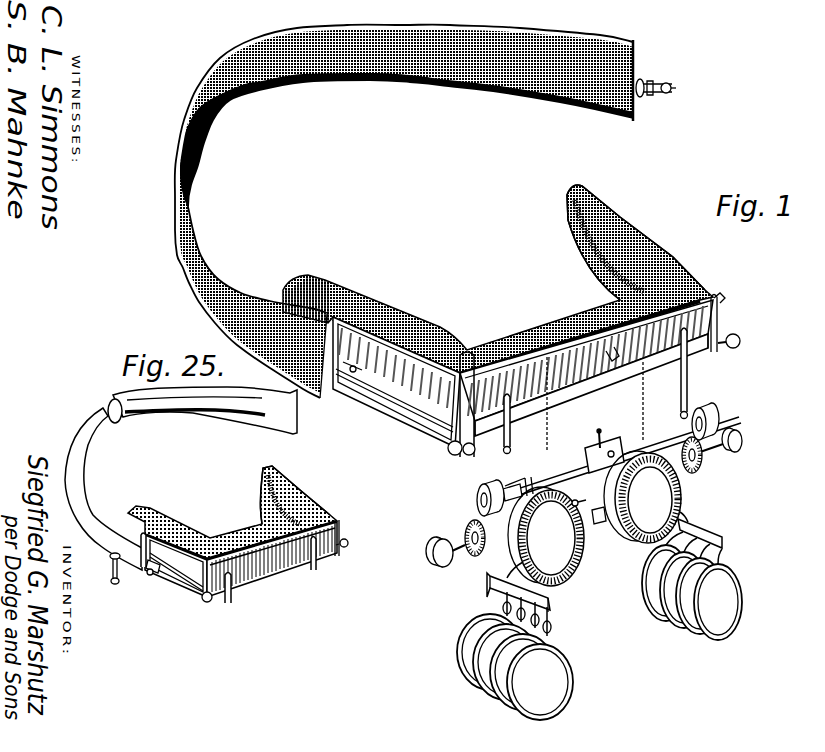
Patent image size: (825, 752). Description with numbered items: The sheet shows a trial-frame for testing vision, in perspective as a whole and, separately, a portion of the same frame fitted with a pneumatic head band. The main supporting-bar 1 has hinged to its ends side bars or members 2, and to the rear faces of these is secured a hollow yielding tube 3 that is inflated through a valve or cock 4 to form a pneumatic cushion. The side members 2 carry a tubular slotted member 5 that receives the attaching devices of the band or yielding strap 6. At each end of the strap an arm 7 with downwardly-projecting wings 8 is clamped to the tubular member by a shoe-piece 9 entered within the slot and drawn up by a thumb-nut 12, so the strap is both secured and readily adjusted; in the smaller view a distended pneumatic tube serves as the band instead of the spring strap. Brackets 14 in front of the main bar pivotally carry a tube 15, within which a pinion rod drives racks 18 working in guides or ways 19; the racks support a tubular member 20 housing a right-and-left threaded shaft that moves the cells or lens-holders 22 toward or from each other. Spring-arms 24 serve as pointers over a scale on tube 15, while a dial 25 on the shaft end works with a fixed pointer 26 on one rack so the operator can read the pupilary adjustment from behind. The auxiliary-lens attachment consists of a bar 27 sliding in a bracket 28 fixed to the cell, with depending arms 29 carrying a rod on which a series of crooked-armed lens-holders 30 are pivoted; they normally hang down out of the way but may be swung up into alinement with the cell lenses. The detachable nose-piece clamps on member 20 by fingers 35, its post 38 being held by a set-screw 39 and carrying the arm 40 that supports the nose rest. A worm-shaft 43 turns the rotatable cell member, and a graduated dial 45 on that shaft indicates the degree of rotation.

In FIG. 1, the main supporting-bar 1 is at (722, 308).
In FIG. 25, the main supporting-bar 1 is at (340, 534).
In FIG. 1, the side bars or members 2 is at (680, 268).
In FIG. 25, the side bars or members 2 is at (312, 502).
In FIG. 1, the hollow yielding body or tube 3 is at (580, 265).
In FIG. 25, the hollow yielding body or tube 3 is at (268, 503).
In FIG. 1, the valve or cock 4 is at (612, 358).
In FIG. 25, the valve or cock 4 is at (297, 566).
In FIG. 1, the tubular slotted member 5 is at (372, 378).
In FIG. 1, the band or yielding strap 6 is at (274, 97).
In FIG. 1, the arm 7 is at (342, 357).
In FIG. 1, the wings 8 is at (356, 366).
In FIG. 25, the wings 8 is at (152, 575).
In FIG. 1, the shoe-piece 9 is at (651, 93).
In FIG. 1, the thumb-nut 12 is at (670, 83).
In FIG. 1, the brackets 14 is at (720, 296).
In FIG. 1, the tube 15 is at (729, 354).
In FIG. 25, the tube 15 is at (346, 556).
In FIG. 1, the racks 18 is at (684, 394).
In FIG. 1, the guides or ways 19 is at (510, 441).
In FIG. 25, the guides or ways 19 is at (236, 598).
In FIG. 1, the tubular member 20 is at (650, 440).
In FIG. 1, the cells or lens-holders 22 is at (573, 566).
In FIG. 1, the spring-arms 24 is at (595, 404).
In FIG. 1, the scale or dial 25 is at (476, 498).
In FIG. 1, the fixed pointer or index-finger 26 is at (500, 487).
In FIG. 1, the bar 27 is at (551, 601).
In FIG. 1, the bracket 28 is at (512, 567).
In FIG. 1, the arms 29 is at (488, 590).
In FIG. 1, the lens-holders 30 is at (556, 645).
In FIG. 1, the inner members or fingers 35 is at (604, 448).
In FIG. 1, the post 38 is at (598, 523).
In FIG. 1, the set-screw 39 is at (613, 451).
In FIG. 1, the arm 40 is at (587, 497).
In FIG. 1, the worm-shaft 43 is at (590, 497).
In FIG. 1, the graduated dial or disk 45 is at (466, 528).